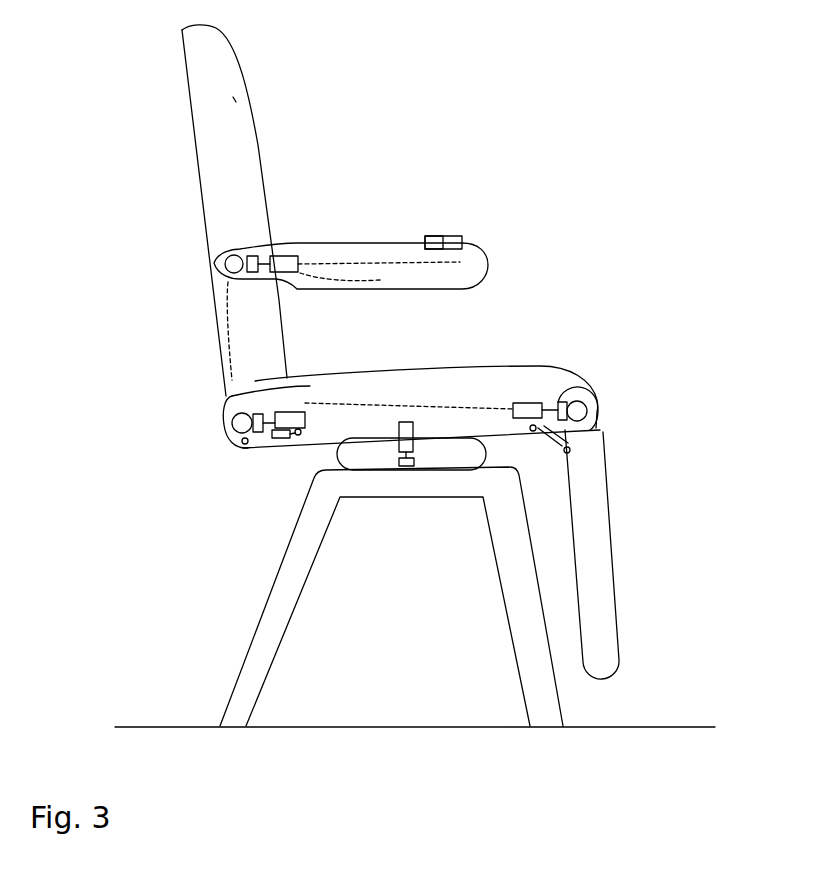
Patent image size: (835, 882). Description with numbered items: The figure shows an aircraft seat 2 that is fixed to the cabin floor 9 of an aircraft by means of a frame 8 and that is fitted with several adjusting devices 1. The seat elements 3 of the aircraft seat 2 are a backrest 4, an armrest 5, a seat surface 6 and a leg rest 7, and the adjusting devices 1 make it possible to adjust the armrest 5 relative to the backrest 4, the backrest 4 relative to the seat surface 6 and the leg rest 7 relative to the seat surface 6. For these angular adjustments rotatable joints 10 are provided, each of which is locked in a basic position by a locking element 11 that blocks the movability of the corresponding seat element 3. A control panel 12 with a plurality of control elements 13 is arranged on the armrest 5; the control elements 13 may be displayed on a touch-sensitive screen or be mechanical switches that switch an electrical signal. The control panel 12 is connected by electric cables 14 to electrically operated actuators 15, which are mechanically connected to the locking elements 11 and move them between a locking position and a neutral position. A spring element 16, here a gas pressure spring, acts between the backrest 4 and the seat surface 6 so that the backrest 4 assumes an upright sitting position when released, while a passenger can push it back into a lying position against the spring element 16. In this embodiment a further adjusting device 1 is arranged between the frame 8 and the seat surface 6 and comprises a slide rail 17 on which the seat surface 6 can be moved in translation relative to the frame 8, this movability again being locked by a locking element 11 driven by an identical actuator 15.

The adjusting device 1 is at (174, 270).
The aircraft seat 2 is at (604, 123).
The seat element 3 is at (233, 97).
The backrest 4 is at (222, 62).
The armrest 5 is at (468, 270).
The seat surface 6 is at (472, 393).
The leg rest 7 is at (600, 652).
The frame 8 is at (268, 620).
The cabin floor 9 is at (370, 728).
The rotatable joint 10 is at (222, 258).
The locking element 11 is at (252, 255).
The control panel 12 is at (452, 237).
The control element 13 is at (437, 237).
The electric cable 14 is at (360, 262).
The actuator 15 is at (282, 254).
The spring element 16 is at (272, 452).
The slide rail 17 is at (392, 455).